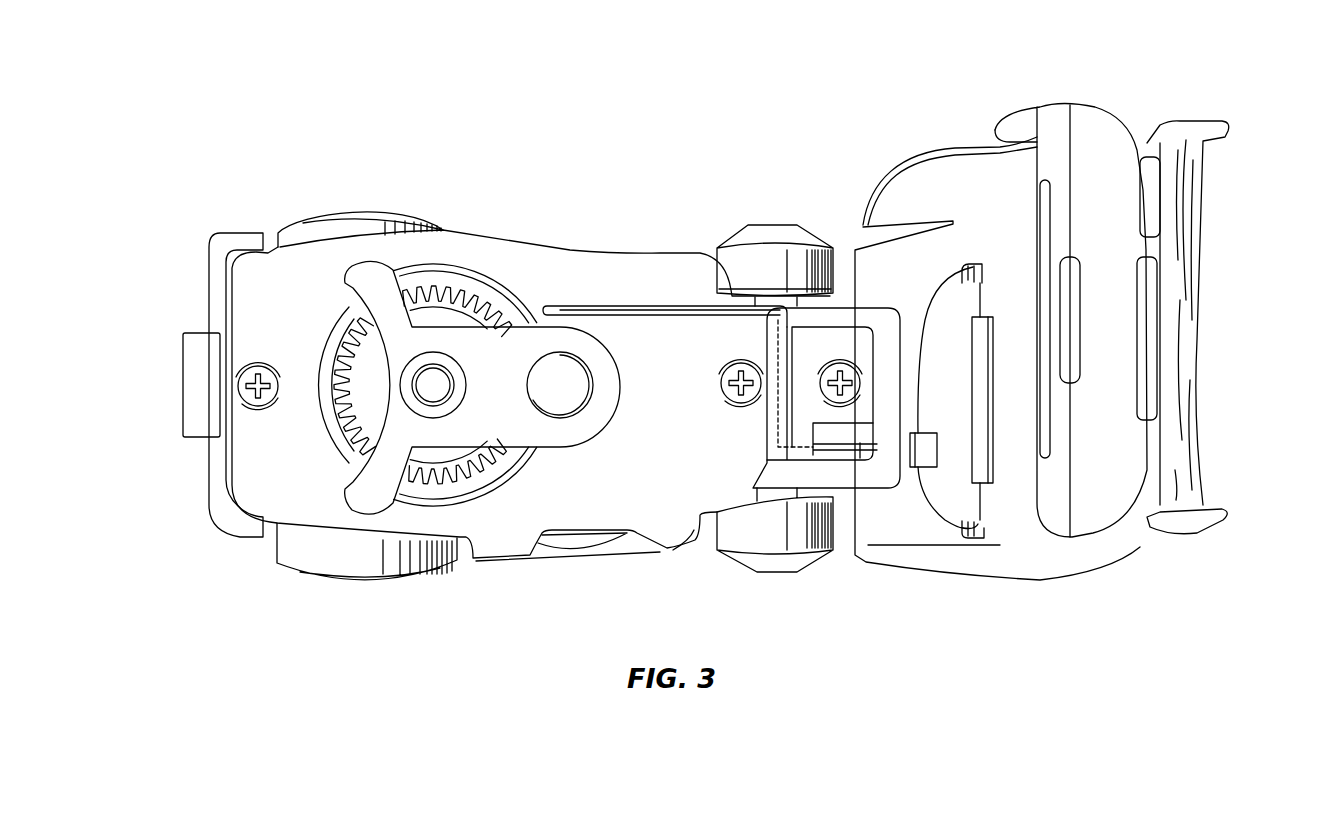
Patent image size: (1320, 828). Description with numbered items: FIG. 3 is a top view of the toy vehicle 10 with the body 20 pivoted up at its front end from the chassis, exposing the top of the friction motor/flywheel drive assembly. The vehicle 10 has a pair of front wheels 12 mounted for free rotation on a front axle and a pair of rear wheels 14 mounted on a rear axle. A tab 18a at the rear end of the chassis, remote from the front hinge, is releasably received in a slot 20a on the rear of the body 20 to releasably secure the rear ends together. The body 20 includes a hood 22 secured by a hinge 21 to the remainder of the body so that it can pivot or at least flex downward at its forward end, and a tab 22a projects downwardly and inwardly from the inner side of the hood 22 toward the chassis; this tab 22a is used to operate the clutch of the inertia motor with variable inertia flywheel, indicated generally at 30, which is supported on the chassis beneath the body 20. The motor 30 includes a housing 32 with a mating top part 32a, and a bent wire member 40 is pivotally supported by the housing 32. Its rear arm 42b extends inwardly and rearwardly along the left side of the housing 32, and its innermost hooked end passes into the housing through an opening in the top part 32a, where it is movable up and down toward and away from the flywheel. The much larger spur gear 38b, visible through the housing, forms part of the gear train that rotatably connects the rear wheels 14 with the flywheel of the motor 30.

The toy vehicle 10 is at (508, 92).
The front wheels 12 is at (770, 225).
The rear wheels 14 is at (350, 210).
The tab 18a is at (198, 380).
The body 20 is at (948, 130).
The slot 20a is at (1073, 317).
The hinge 21 is at (980, 533).
The hood 22 is at (958, 389).
The tab 22a is at (918, 467).
The variable inertia flywheel motor 30 is at (511, 196).
The housing 32 is at (535, 272).
The top part 32a is at (283, 349).
The spur gear 38b is at (458, 318).
The bent wire member 40 is at (631, 300).
The rear arm 42b is at (662, 332).